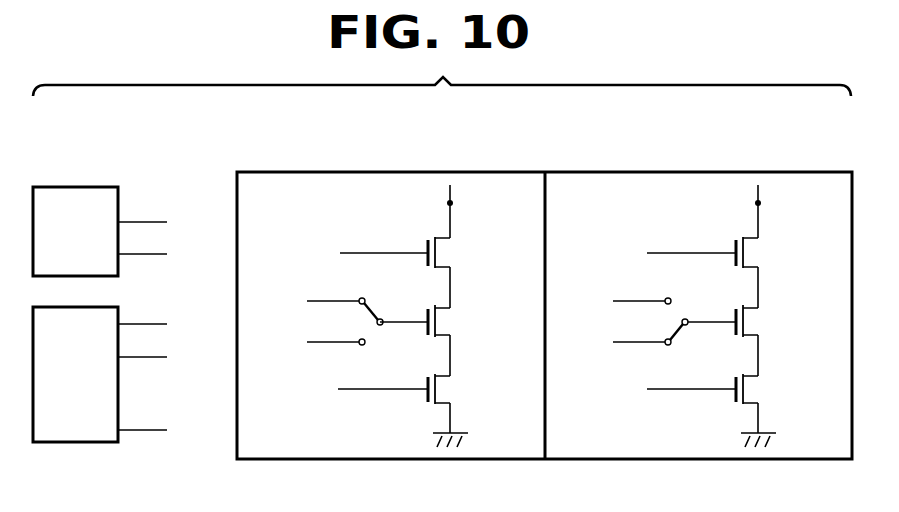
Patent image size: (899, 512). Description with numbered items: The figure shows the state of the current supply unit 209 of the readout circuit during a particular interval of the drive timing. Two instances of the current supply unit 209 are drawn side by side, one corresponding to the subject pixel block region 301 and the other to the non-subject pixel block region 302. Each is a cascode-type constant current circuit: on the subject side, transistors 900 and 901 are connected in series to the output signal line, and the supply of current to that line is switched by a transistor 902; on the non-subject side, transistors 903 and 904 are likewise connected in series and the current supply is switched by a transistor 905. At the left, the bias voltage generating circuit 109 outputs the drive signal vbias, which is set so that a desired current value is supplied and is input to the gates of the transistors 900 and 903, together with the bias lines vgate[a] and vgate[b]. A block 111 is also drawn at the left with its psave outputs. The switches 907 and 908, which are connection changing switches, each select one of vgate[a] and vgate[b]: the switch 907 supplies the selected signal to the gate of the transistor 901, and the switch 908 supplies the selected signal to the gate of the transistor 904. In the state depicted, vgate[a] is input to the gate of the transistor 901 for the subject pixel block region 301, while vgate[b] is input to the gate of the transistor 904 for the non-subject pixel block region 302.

The power save control unit 111 is at (80, 187).
The bias voltage generating circuit 109 is at (78, 442).
The current supply unit 209 is at (544, 288).
The subject pixel block region 301 is at (360, 171).
The non-subject pixel block region 302 is at (668, 171).
The transistor 900 is at (452, 393).
The transistor 901 is at (452, 326).
The transistor 902 is at (452, 257).
The transistor 903 is at (760, 393).
The transistor 904 is at (760, 326).
The transistor 905 is at (760, 257).
The switch 907 is at (392, 288).
The switch 908 is at (673, 345).